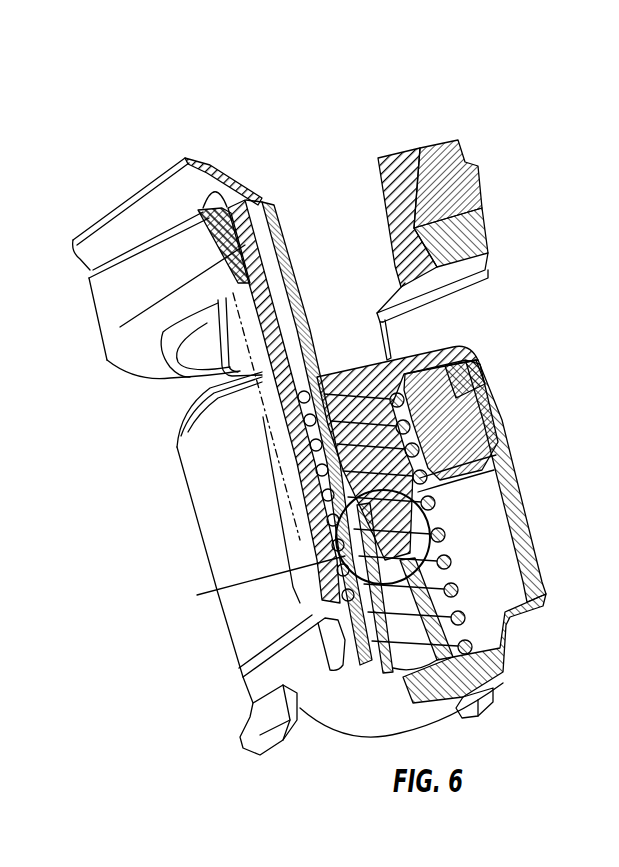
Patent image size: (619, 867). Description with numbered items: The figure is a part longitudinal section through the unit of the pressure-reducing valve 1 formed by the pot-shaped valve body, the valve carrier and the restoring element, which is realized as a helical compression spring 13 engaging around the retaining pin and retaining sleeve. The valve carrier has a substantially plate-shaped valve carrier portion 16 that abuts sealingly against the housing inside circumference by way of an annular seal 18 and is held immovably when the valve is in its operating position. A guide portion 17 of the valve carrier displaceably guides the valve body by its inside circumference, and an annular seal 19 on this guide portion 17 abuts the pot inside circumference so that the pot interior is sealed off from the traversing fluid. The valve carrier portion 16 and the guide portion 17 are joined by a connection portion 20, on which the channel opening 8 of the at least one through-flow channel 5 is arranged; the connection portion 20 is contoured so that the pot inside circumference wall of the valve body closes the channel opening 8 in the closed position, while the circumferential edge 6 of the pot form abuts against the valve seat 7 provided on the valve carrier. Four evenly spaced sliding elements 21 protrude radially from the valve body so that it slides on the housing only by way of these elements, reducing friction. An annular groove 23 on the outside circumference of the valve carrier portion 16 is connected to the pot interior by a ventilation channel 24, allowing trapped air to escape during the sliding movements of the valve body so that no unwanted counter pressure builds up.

The pressure-reducing valve 1 is at (380, 80).
The through-flow channel 5 is at (303, 250).
The circumferential edge 6 is at (477, 340).
The valve seat 7 is at (447, 290).
The channel opening 8 is at (184, 408).
The helical compression spring 13 is at (447, 538).
The valve carrier portion 16 is at (418, 152).
The guide portion 17 is at (473, 433).
The annular seal 18 is at (485, 217).
The annular seal 19 is at (467, 392).
The connection portion 20 is at (233, 349).
The sliding elements 21 is at (260, 727).
The annular groove 23 is at (460, 177).
The ventilation channel 24 is at (278, 262).